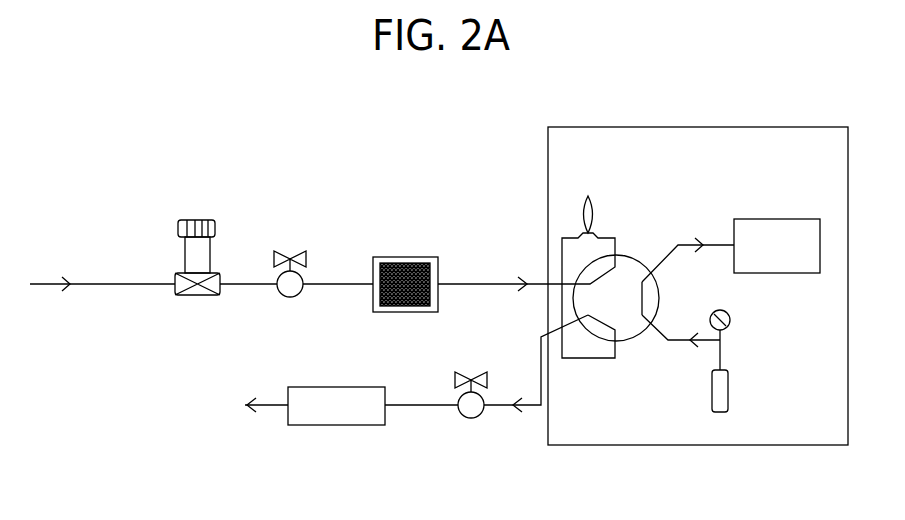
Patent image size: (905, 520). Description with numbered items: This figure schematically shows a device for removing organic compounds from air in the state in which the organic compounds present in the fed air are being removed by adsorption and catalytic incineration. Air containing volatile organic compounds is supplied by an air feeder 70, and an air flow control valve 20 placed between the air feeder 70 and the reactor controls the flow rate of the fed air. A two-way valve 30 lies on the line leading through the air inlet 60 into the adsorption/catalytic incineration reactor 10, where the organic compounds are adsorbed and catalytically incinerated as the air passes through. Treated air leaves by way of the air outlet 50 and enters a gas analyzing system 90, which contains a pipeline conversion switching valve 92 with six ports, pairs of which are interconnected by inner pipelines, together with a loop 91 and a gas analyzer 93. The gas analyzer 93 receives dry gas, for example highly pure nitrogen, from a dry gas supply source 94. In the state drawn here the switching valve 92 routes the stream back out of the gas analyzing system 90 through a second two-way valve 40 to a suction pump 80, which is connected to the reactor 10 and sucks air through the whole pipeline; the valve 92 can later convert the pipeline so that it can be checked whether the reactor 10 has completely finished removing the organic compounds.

The adsorption/catalytic incineration reactor 10 is at (449, 247).
The air flow control valve 20 is at (197, 265).
The 2-way valve 30 is at (305, 252).
The 2-way valve 40 is at (478, 382).
The air outlet 50 is at (460, 284).
The air inlet 60 is at (333, 285).
The air feeder 70 is at (122, 284).
The suction pump 80 is at (302, 405).
The gas analyzing system 90 is at (576, 157).
The loop 91 is at (587, 230).
The pipeline conversion switching valve 92 is at (616, 298).
The gas analyzer 93 is at (753, 247).
The dry gas supply source 94 is at (722, 372).